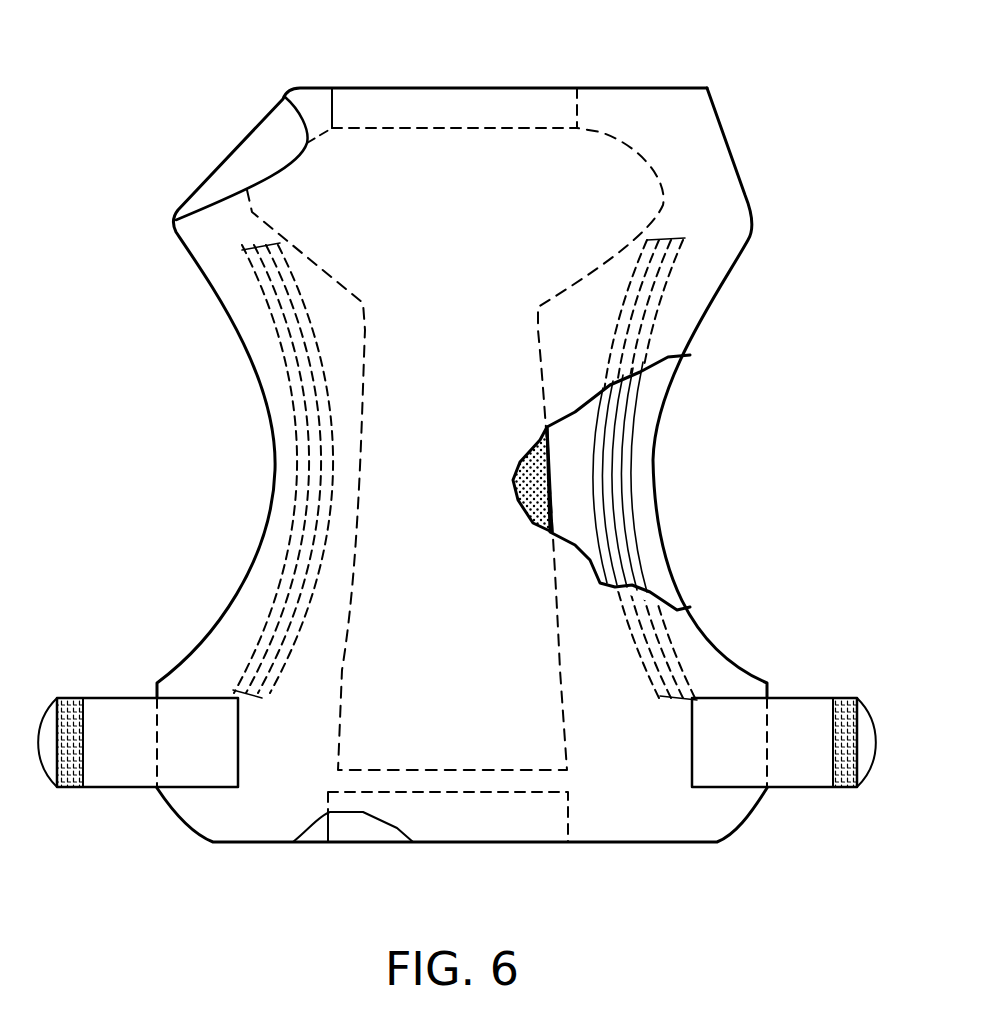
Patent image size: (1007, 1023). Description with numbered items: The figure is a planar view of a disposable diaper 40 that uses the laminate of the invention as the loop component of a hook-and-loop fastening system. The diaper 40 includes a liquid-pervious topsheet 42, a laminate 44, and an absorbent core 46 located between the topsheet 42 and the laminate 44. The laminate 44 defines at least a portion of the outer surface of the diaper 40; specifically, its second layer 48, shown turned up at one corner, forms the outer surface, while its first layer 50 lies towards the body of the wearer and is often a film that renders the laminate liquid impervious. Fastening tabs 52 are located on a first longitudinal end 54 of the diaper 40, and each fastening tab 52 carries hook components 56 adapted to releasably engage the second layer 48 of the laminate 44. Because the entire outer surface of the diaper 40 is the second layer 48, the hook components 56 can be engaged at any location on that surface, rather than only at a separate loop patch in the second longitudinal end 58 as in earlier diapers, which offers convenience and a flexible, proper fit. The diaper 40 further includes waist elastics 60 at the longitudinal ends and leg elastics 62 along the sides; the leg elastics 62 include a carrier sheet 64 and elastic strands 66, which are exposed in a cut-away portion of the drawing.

The disposable diaper 40 is at (280, 66).
The liquid-pervious topsheet 42 is at (692, 300).
The laminate 44 is at (667, 396).
The absorbent core 46 is at (530, 520).
The second layer 48 is at (247, 161).
The first layer 50 is at (577, 463).
The fastening tabs 52 is at (112, 638).
The first longitudinal end 54 is at (270, 843).
The hook components 56 is at (70, 790).
The second longitudinal end 58 is at (655, 88).
The waist elastics 60 is at (462, 108).
The leg elastics 62 is at (298, 460).
The carrier sheet 64 is at (627, 577).
The elastic strands 66 is at (622, 432).